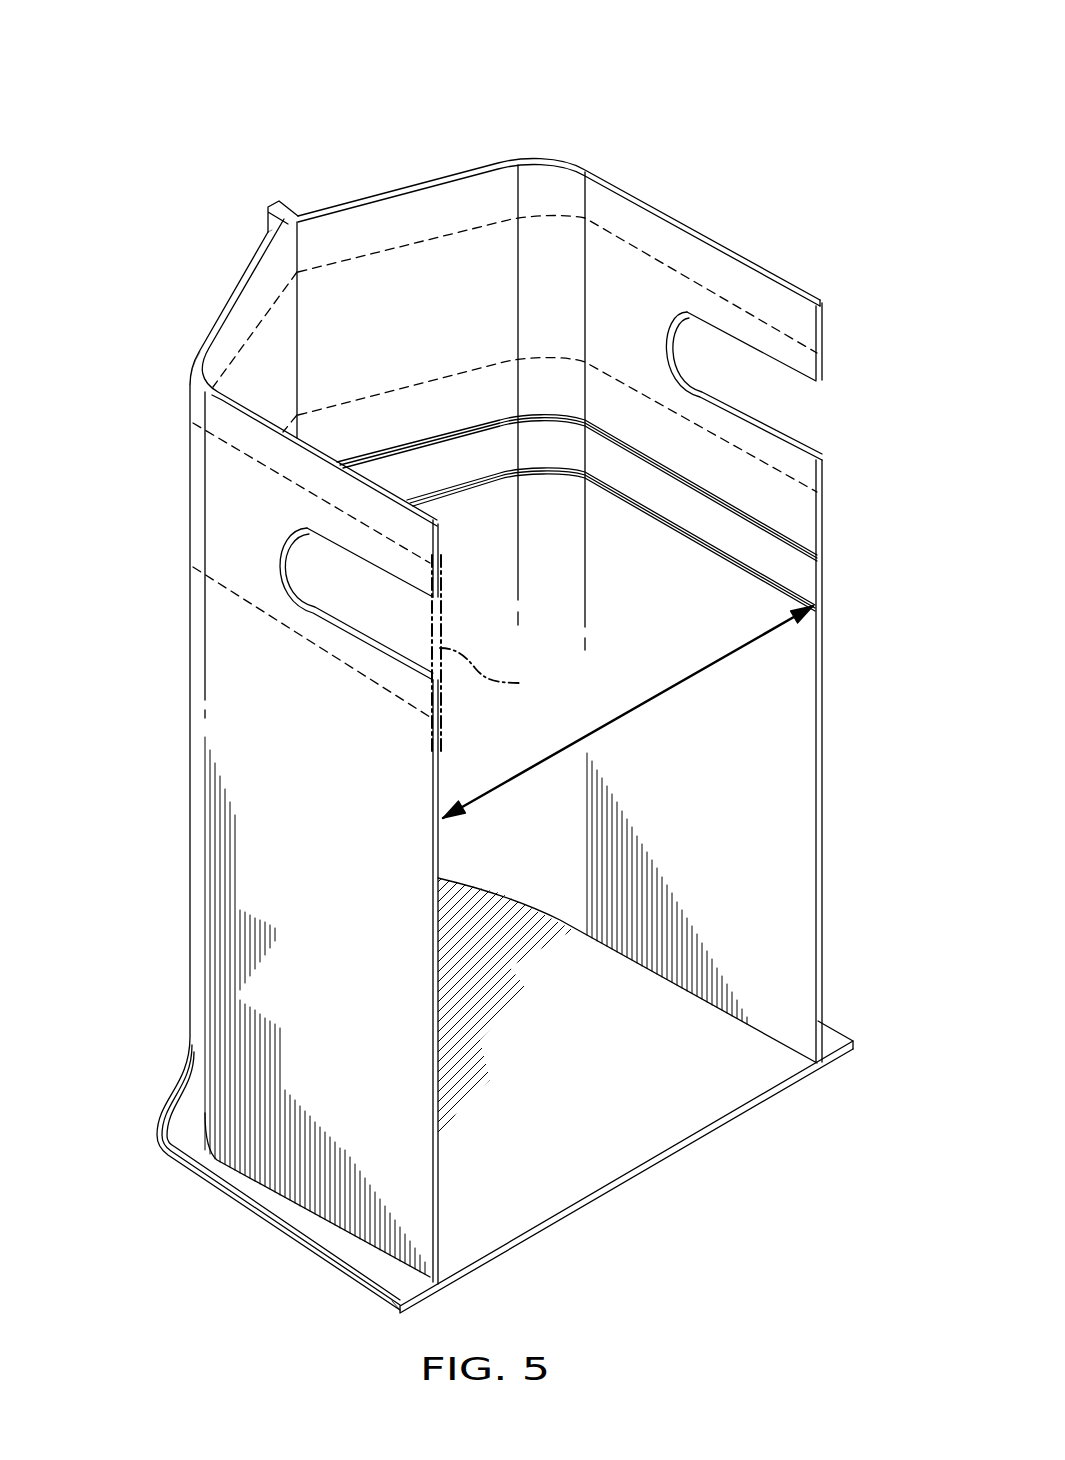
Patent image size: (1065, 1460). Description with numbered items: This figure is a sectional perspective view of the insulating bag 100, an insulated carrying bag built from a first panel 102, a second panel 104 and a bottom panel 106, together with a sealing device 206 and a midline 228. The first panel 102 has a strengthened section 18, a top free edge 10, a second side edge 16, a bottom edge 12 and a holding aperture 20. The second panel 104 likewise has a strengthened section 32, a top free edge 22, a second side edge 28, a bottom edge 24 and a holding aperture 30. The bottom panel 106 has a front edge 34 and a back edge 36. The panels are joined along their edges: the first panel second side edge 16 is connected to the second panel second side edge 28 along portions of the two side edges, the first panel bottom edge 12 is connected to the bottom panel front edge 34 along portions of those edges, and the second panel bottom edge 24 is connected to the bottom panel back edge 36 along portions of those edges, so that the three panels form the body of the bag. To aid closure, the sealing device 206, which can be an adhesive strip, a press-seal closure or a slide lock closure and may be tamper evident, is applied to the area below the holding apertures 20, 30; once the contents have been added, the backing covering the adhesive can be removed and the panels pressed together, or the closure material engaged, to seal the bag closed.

The insulating bag 100 is at (162, 140).
The top free edge 10 is at (205, 340).
The bottom edge 12 is at (395, 1298).
The second side edge 16 is at (268, 219).
The strengthened section 18 is at (235, 492).
The holding aperture 20 is at (333, 590).
The top free edge 22 is at (733, 248).
The bottom edge 24 is at (830, 1030).
The second side edge 28 is at (298, 215).
The holding aperture 30 is at (768, 395).
The strengthened section 32 is at (430, 283).
The front edge 34 is at (405, 1312).
The back edge 36 is at (828, 1062).
The first panel 102 is at (356, 810).
The second panel 104 is at (746, 817).
The bottom panel 106 is at (618, 1081).
The sealing device 206 is at (822, 546).
The midline 228 is at (655, 695).